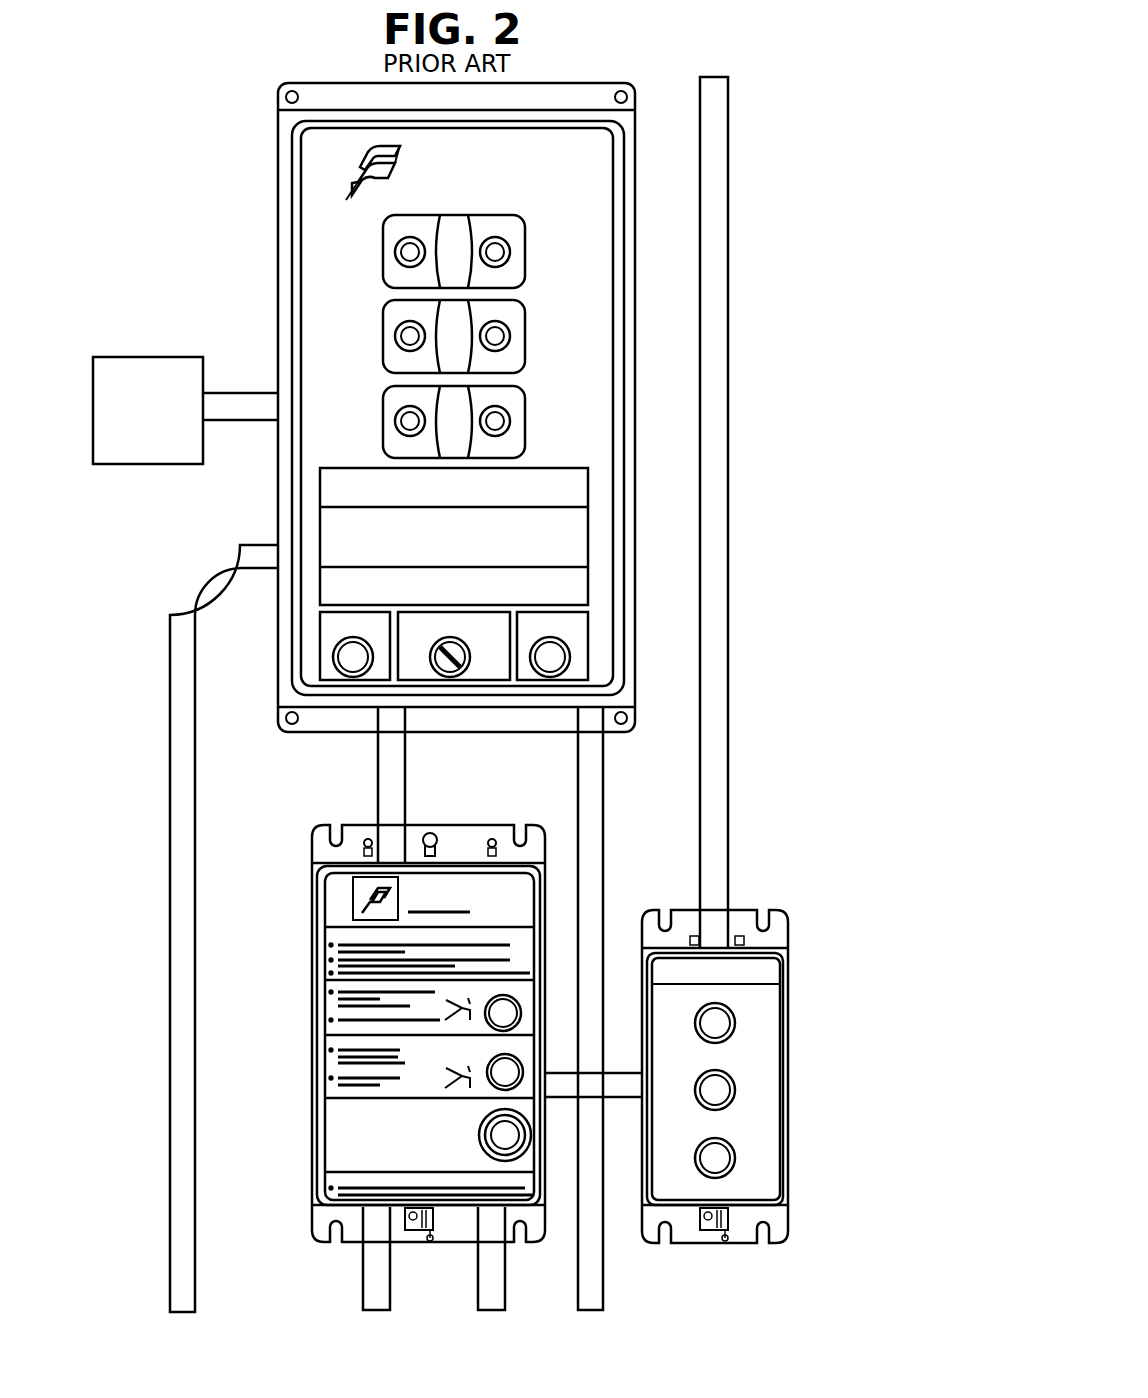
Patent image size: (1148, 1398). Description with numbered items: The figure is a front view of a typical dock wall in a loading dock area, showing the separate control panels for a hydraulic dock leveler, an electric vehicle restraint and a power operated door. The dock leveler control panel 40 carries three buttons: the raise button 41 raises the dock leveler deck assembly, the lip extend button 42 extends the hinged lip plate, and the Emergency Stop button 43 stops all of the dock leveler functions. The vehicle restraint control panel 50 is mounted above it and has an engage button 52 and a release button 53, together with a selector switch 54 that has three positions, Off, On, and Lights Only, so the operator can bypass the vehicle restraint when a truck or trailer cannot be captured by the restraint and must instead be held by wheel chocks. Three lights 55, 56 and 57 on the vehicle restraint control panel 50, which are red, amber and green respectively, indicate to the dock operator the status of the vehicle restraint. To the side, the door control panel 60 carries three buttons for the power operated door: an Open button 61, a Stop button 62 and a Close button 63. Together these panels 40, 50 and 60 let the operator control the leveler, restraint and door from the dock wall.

The dock leveler control panel 40 is at (312, 862).
The raise button 41 is at (521, 1011).
The lip extend button 42 is at (523, 1072).
The Emergency Stop button 43 is at (531, 1135).
The vehicle restraint control panel 50 is at (278, 118).
The engage button 52 is at (333, 662).
The release button 53 is at (570, 662).
The power supply selector switch 54 is at (462, 672).
The red light 55 is at (525, 250).
The amber light 56 is at (525, 334).
The green light 57 is at (525, 418).
The door control panel 60 is at (788, 925).
The Open button 61 is at (737, 1023).
The Stop button 62 is at (737, 1090).
The Close button 63 is at (737, 1158).